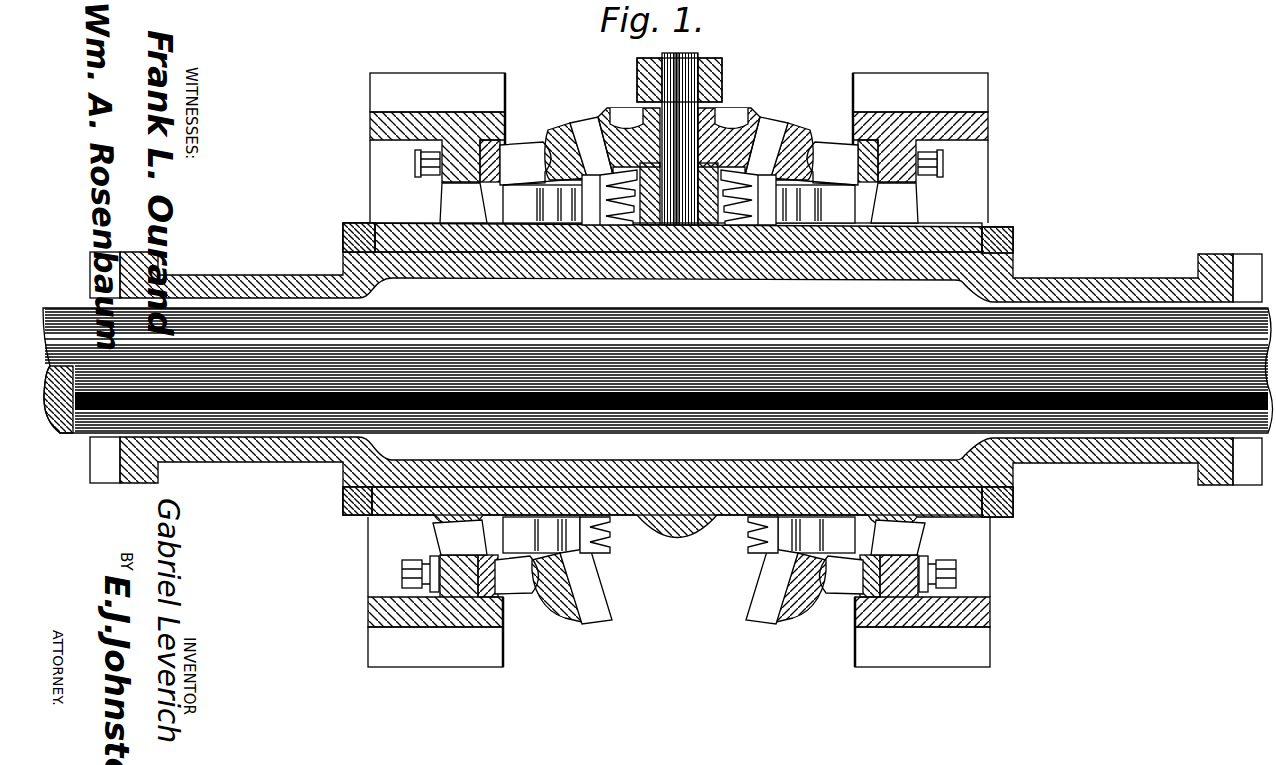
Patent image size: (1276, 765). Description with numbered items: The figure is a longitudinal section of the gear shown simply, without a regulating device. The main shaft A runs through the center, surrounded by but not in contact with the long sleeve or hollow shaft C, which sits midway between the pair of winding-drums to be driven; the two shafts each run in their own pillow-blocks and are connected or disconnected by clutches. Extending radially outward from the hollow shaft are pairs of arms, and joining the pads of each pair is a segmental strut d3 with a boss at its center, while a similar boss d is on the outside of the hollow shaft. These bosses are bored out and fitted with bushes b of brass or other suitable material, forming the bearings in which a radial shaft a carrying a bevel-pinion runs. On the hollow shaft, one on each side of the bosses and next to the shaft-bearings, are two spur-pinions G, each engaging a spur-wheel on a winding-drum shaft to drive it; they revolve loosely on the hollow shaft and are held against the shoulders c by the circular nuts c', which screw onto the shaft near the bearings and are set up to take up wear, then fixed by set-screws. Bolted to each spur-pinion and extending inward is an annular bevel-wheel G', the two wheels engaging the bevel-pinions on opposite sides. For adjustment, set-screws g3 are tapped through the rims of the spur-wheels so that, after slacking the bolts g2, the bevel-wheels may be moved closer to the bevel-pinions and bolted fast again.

The main shaft A is at (658, 370).
The hollow shaft C is at (676, 380).
The circular nut c' is at (684, 356).
The shoulder c is at (677, 369).
The spur-pinion G is at (679, 370).
The annular bevel-wheel G' is at (679, 389).
The boss d is at (679, 366).
The segmental strut d3 is at (724, 78).
The radial shaft a is at (694, 222).
The bush b is at (718, 200).
The set-screw g3 is at (941, 165).
The bolt g2 is at (958, 573).